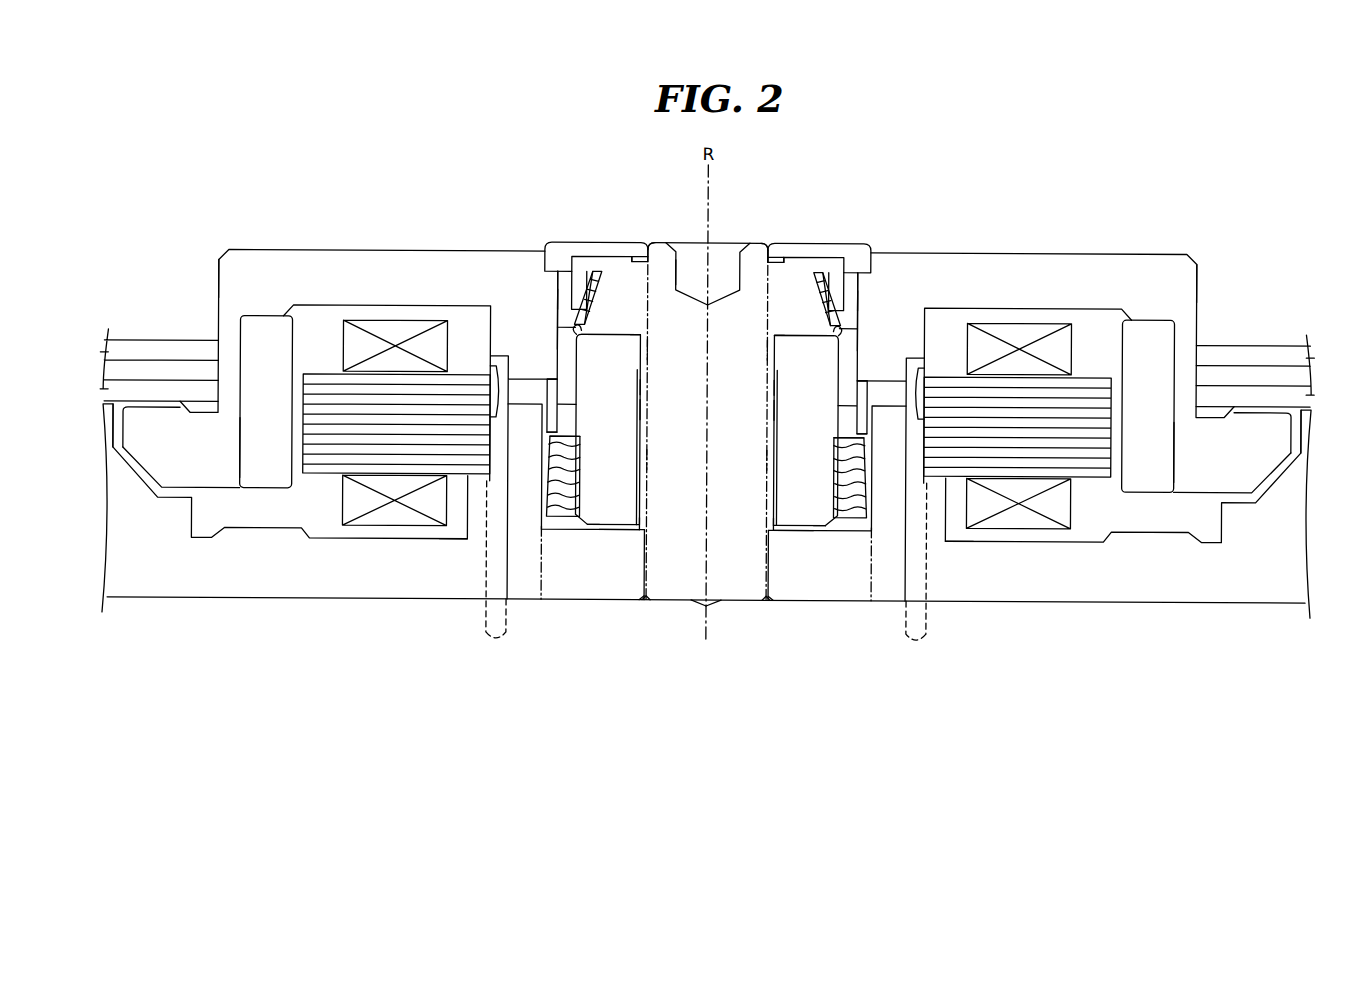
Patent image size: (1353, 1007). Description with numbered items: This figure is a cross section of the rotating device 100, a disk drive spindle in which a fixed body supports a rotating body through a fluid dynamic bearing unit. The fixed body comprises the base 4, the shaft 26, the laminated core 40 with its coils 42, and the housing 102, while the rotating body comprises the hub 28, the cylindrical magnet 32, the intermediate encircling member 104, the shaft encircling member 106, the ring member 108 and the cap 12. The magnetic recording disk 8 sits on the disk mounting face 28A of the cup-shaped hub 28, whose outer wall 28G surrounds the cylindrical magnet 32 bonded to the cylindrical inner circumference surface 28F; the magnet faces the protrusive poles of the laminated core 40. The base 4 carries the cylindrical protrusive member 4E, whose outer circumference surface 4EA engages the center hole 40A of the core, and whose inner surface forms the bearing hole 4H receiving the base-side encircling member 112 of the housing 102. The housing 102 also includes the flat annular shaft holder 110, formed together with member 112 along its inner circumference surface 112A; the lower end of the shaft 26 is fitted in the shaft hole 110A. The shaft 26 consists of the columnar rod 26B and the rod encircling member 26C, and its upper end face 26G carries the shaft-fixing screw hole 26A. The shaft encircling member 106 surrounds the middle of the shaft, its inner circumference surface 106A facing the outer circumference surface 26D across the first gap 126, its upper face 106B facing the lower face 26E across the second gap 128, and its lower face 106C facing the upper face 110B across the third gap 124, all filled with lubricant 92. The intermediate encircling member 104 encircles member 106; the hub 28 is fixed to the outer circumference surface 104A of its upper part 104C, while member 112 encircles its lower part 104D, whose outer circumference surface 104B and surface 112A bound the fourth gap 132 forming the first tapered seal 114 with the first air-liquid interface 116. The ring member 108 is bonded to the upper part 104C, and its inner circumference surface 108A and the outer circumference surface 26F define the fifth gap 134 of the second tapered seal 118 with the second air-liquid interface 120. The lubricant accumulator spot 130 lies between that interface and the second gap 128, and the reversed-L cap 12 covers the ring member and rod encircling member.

The base 4 is at (125, 593).
The protrusive member 4E is at (706, 575).
The bearing hole 4H is at (543, 548).
The outer circumference surface 4EA is at (452, 540).
The magnetic recording disk 8 is at (102, 368).
The cap 12 is at (554, 248).
The shaft 26 is at (680, 597).
The shaft-fixing screw hole 26A is at (676, 249).
The columnar rod 26B is at (767, 242).
The rod encircling member 26C is at (630, 262).
The outer circumference surface 26D is at (634, 469).
The lower face 26E is at (706, 356).
The outer circumference surface 26F is at (612, 256).
The shaft upper end face 26G is at (652, 240).
The hub 28 is at (405, 252).
The disk mounting face 28A is at (156, 404).
The cylindrical inner circumference surface 28F is at (230, 444).
The outer wall 28G is at (218, 279).
The cylindrical magnet 32 is at (258, 328).
The laminated core 40 is at (324, 460).
The center hole 40A is at (492, 380).
The coil 42 is at (355, 343).
The lubricant 92 is at (646, 526).
The rotating device 100 is at (690, 732).
The housing 102 is at (572, 600).
The intermediate encircling member 104 is at (557, 305).
The outer circumference surface 104A is at (561, 343).
The outer circumference surface 104B is at (567, 451).
The upper part 104C is at (568, 392).
The lower part 104D is at (568, 412).
The shaft encircling member 106 is at (635, 441).
The inner circumference surface 106A is at (639, 414).
The upper face 106B is at (639, 331).
The lower face 106C is at (628, 527).
The ring member 108 is at (562, 272).
The inner circumference surface 108A is at (559, 302).
The shaft holder 110 is at (622, 600).
The shaft hole 110A is at (644, 604).
The upper face 110B is at (598, 526).
The base-side encircling member 112 is at (534, 600).
The inner circumference surface 112A is at (559, 436).
The first tapered seal 114 is at (568, 487).
The first air-liquid interface 116 is at (568, 469).
The second tapered seal 118 is at (597, 292).
The second air-liquid interface 120 is at (580, 290).
The third gap 124 is at (620, 532).
The first gap 126 is at (638, 394).
The second gap 128 is at (634, 334).
The lubricant accumulator spot 130 is at (571, 327).
The fourth gap 132 is at (568, 504).
The fifth gap 134 is at (597, 277).